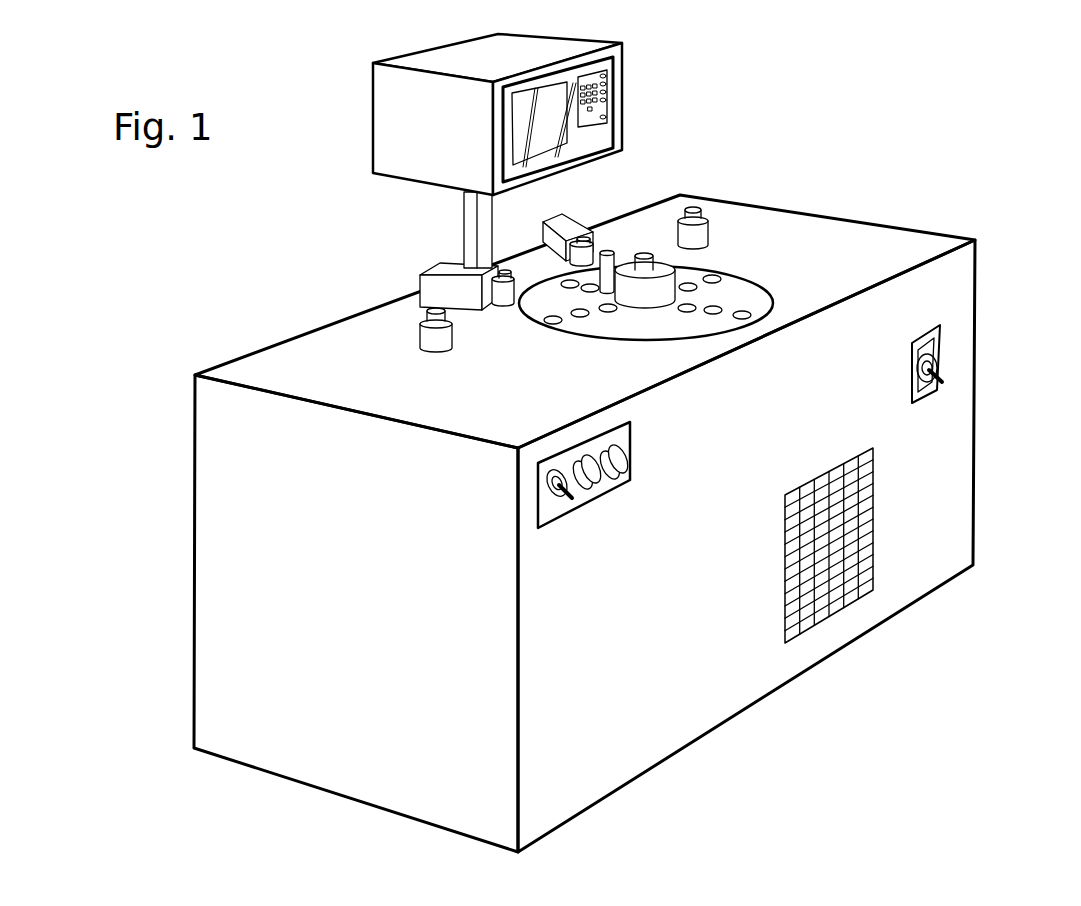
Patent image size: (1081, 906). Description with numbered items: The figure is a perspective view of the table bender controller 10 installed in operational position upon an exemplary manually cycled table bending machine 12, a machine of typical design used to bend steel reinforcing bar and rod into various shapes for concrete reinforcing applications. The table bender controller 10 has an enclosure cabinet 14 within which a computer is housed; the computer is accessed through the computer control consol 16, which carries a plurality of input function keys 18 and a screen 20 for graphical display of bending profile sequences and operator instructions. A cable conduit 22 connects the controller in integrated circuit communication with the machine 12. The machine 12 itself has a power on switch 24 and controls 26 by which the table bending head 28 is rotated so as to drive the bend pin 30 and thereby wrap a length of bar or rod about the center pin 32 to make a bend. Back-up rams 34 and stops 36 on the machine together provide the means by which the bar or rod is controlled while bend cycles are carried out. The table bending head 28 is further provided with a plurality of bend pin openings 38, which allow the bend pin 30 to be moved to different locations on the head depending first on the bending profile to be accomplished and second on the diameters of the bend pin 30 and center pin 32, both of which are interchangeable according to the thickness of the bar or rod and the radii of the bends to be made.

The table bender controller 10 is at (553, 105).
The manually cycled table bending machine 12 is at (826, 178).
The enclosure cabinet 14 is at (460, 58).
The computer control consol 16 is at (640, 77).
The input function keys 18 is at (600, 104).
The screen 20 is at (533, 125).
The cable conduit 22 is at (468, 212).
The power on switch 24 is at (943, 368).
The controls 26 is at (628, 447).
The table bending head 28 is at (752, 299).
The bend pin 30 is at (609, 252).
The center pin 32 is at (657, 287).
The back-up rams 34 is at (443, 288).
The stops 36 is at (432, 338).
The bend pin openings 38 is at (568, 286).